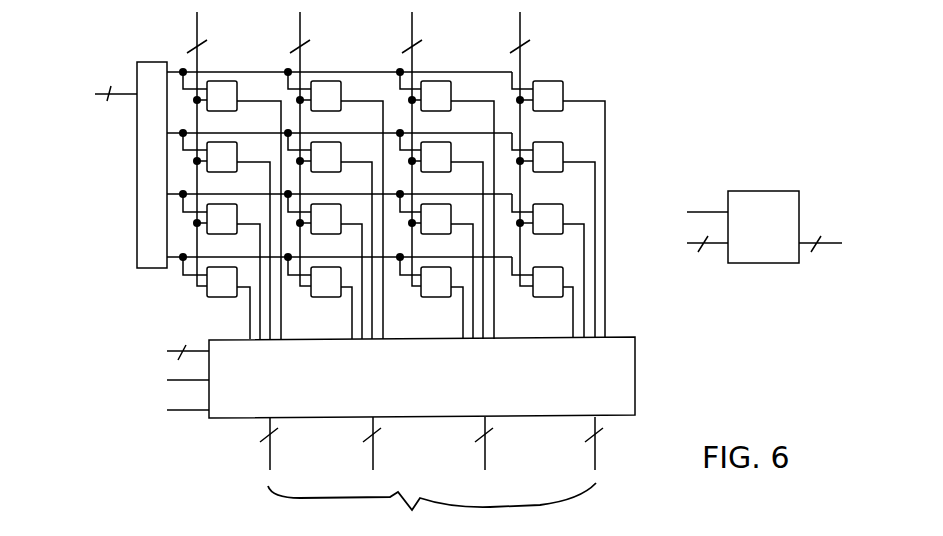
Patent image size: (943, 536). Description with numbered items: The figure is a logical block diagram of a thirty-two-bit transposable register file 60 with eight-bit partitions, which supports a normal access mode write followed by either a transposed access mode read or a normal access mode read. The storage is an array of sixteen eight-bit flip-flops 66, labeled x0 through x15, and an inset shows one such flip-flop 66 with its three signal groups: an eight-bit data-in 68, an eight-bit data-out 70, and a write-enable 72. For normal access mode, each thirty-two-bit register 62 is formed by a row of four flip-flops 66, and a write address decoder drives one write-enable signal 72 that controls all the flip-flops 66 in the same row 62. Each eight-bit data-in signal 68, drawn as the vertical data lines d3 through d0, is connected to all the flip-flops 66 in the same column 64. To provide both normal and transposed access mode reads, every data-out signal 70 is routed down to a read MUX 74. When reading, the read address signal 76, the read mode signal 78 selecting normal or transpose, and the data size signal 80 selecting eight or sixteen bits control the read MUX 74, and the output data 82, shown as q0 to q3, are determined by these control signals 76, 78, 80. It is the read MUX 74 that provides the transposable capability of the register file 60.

The transposable register file 60 is at (398, 174).
The 32-bit register 62 is at (573, 276).
The column 64 is at (553, 66).
The 8-bit flip-flop 66 is at (563, 85).
The 8-bit data-in 68 is at (719, 248).
The 8-bit data-out 70 is at (839, 270).
The write-enable 72 is at (717, 207).
The read MUX 74 is at (636, 382).
The read address signal 76 is at (175, 350).
The read mode signal 78 is at (196, 380).
The data size signal 80 is at (196, 412).
The output data 82 is at (438, 476).